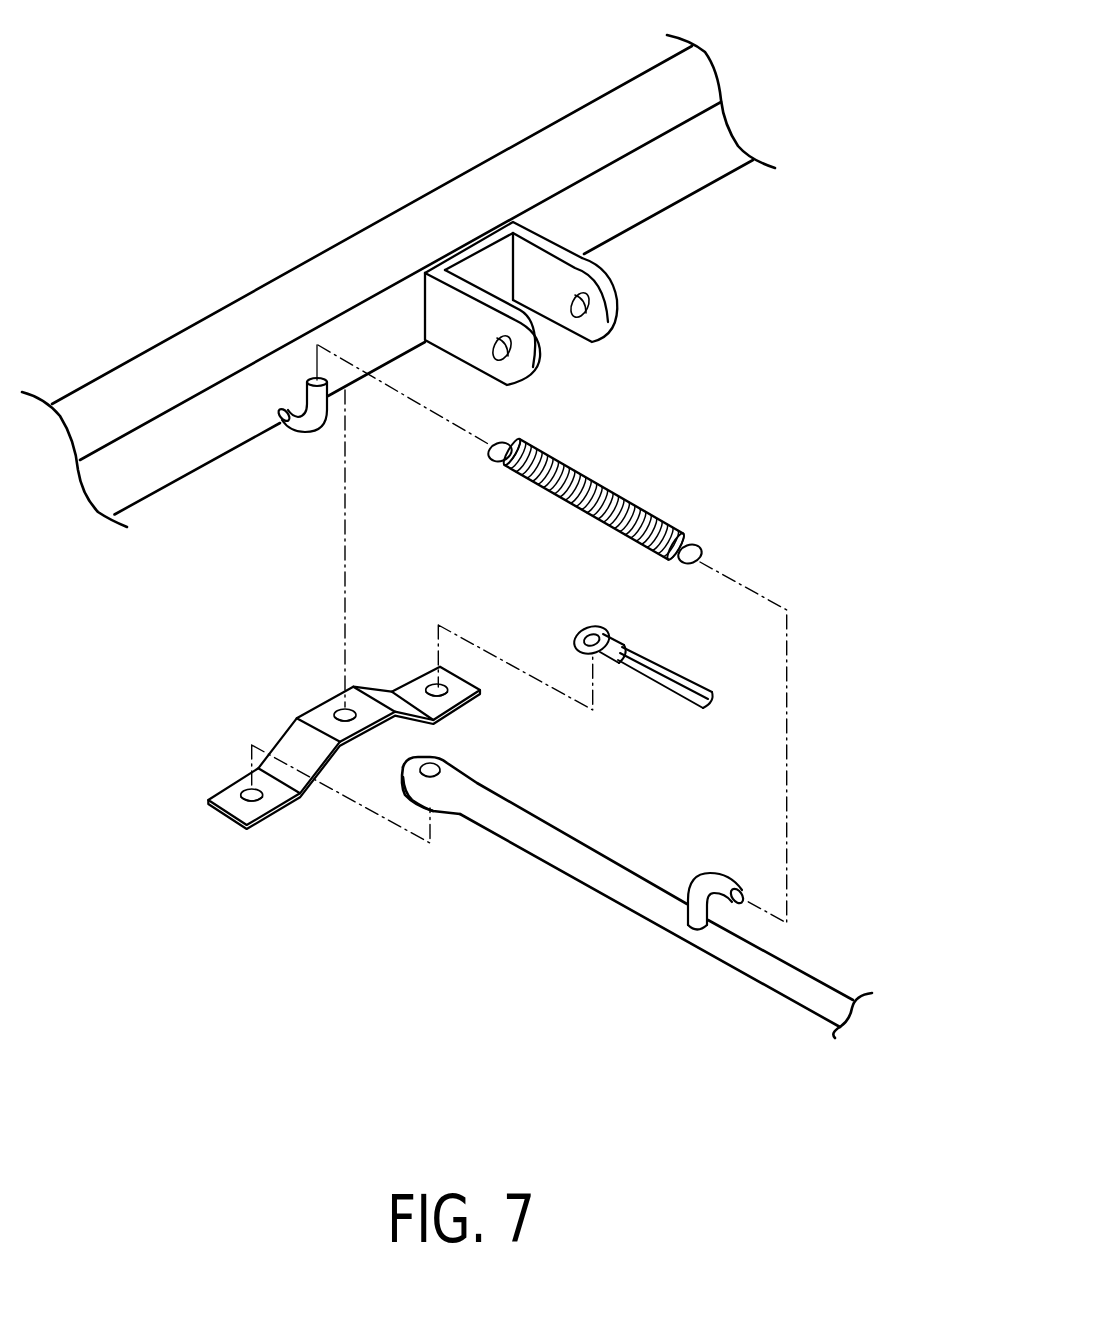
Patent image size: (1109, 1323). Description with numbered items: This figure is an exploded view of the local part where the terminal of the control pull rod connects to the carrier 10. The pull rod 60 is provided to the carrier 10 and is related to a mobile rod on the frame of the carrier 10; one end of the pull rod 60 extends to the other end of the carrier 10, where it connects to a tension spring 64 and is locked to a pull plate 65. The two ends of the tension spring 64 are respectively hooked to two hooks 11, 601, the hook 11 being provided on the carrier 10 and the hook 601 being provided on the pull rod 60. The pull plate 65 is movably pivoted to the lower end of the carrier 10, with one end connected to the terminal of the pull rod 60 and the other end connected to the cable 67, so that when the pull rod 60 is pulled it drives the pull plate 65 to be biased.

The carrier 10 is at (390, 235).
The hook 11 is at (308, 433).
The tension spring 64 is at (608, 487).
The pull plate 65 is at (307, 753).
The cable 67 is at (660, 677).
The pull rod 60 is at (588, 868).
The hook 601 is at (727, 885).